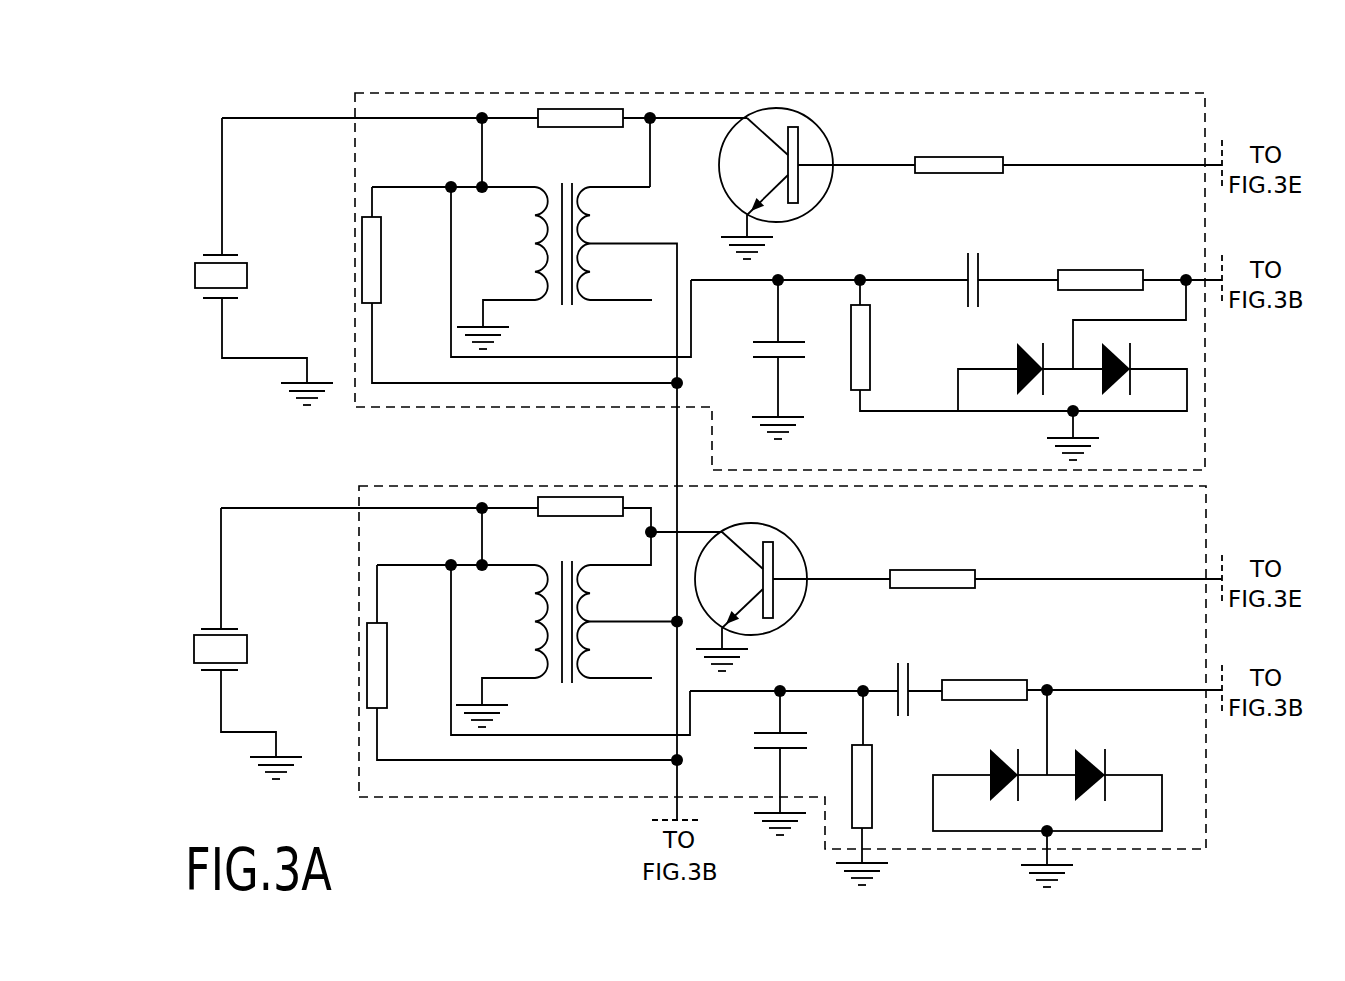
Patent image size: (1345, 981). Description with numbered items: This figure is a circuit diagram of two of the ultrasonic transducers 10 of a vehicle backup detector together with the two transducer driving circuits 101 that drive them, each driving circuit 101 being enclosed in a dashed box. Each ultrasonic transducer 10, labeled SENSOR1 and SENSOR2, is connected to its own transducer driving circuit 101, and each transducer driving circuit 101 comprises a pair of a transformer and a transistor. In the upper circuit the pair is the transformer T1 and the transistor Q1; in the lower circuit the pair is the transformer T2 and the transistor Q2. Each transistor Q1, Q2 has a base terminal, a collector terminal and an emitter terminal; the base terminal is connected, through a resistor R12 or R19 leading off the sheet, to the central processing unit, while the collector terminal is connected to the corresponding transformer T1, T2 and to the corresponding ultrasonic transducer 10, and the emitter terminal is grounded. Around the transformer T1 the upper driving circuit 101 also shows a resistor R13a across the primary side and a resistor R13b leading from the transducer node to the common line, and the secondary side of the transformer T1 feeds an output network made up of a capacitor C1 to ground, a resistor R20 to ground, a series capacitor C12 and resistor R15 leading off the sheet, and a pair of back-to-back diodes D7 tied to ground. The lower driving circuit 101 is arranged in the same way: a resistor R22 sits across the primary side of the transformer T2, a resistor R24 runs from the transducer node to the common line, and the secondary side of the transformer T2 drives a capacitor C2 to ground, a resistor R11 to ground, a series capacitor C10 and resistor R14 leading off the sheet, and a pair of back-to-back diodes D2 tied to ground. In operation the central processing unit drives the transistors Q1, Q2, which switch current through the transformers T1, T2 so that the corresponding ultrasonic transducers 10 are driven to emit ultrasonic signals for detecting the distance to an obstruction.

The ultrasonic transducer 10 is at (259, 448).
The transducer driving circuit 101 is at (393, 91).
The resistor R13 R13a is at (580, 133).
The resistor R13 R13b is at (519, 285).
The transformer T1 is at (554, 254).
The transistor Q1 is at (817, 183).
The resistor R12 is at (1068, 150).
The capacitor C12 is at (977, 267).
The resistor R15 is at (1100, 265).
The capacitor C1 is at (761, 359).
The resistor R20 is at (904, 345).
The diode pair D7 is at (1072, 370).
The resistor R22 is at (580, 525).
The resistor R24 is at (522, 662).
The transformer T2 is at (554, 644).
The transistor Q2 is at (792, 597).
The resistor R19 is at (1056, 565).
The capacitor C10 is at (907, 676).
The resistor R14 is at (984, 674).
The capacitor C2 is at (763, 763).
The resistor R11 is at (881, 788).
The diode pair D2 is at (1047, 788).